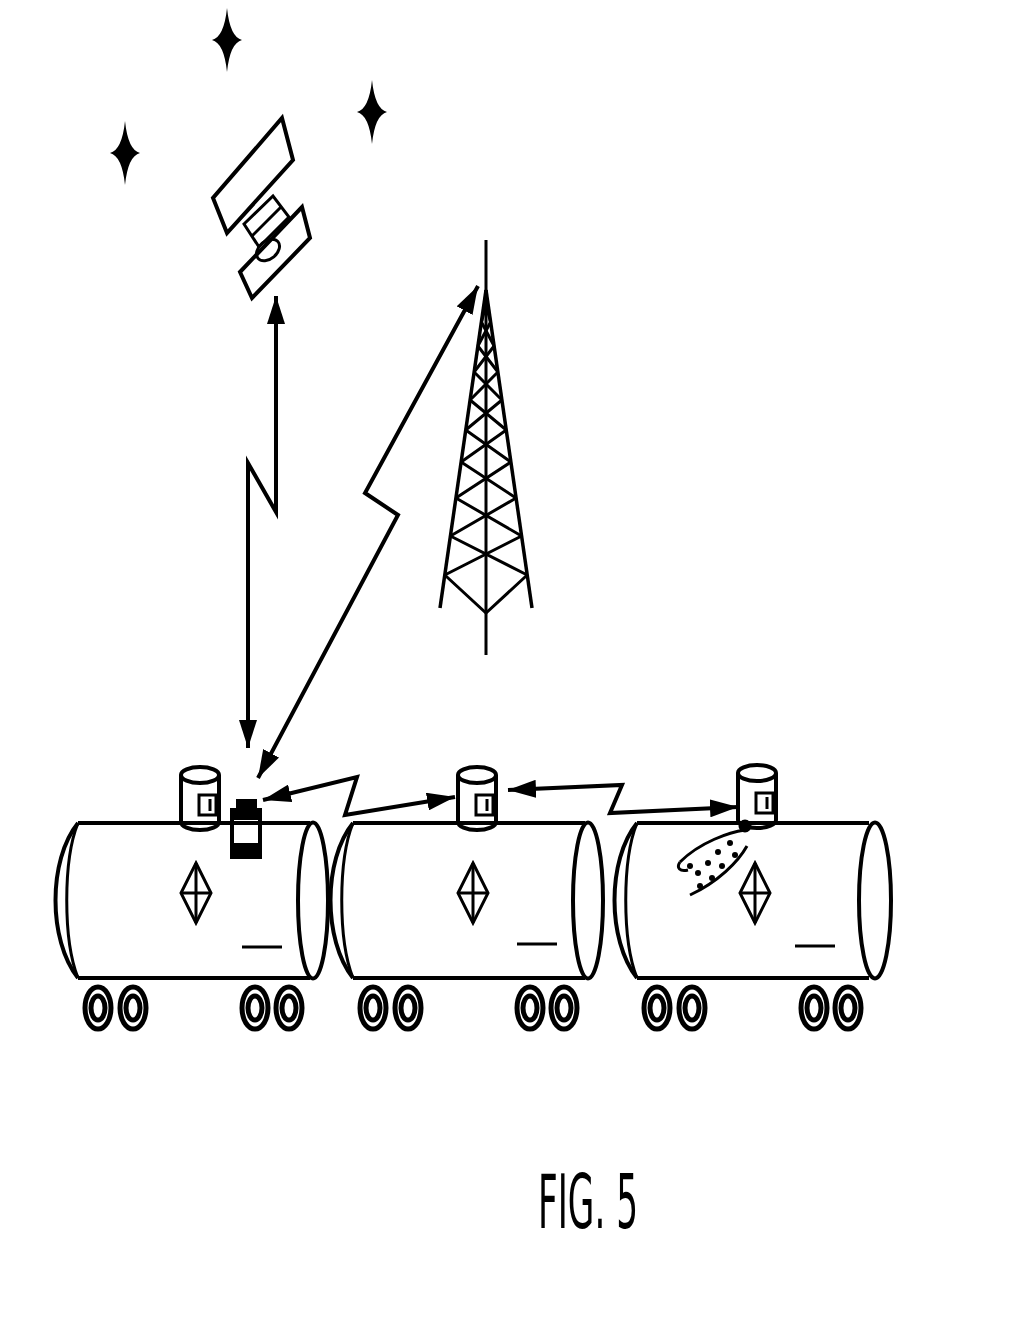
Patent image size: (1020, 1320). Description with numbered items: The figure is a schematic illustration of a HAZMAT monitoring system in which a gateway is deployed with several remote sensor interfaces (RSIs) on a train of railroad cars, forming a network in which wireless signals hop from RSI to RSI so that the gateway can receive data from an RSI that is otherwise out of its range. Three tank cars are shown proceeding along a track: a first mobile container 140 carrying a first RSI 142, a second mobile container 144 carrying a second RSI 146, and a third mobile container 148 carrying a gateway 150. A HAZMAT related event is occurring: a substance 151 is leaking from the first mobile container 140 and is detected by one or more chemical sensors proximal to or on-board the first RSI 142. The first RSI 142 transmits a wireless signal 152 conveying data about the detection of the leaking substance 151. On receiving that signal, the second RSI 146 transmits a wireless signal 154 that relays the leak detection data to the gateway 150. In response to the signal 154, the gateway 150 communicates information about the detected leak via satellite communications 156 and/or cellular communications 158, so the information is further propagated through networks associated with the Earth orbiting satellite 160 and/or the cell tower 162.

The first mobile container 140 is at (753, 926).
The first RSI 142 is at (780, 787).
The second mobile container 144 is at (467, 926).
The second RSI 146 is at (497, 772).
The third mobile container 148 is at (192, 926).
The gateway 150 is at (247, 803).
The substance 151 is at (690, 895).
The wireless signal 152 is at (572, 785).
The wireless signal 154 is at (322, 786).
The satellite communications 156 is at (246, 530).
The cellular communications 158 is at (395, 437).
The Earth orbiting satellite 160 is at (222, 216).
The cell tower 162 is at (489, 258).